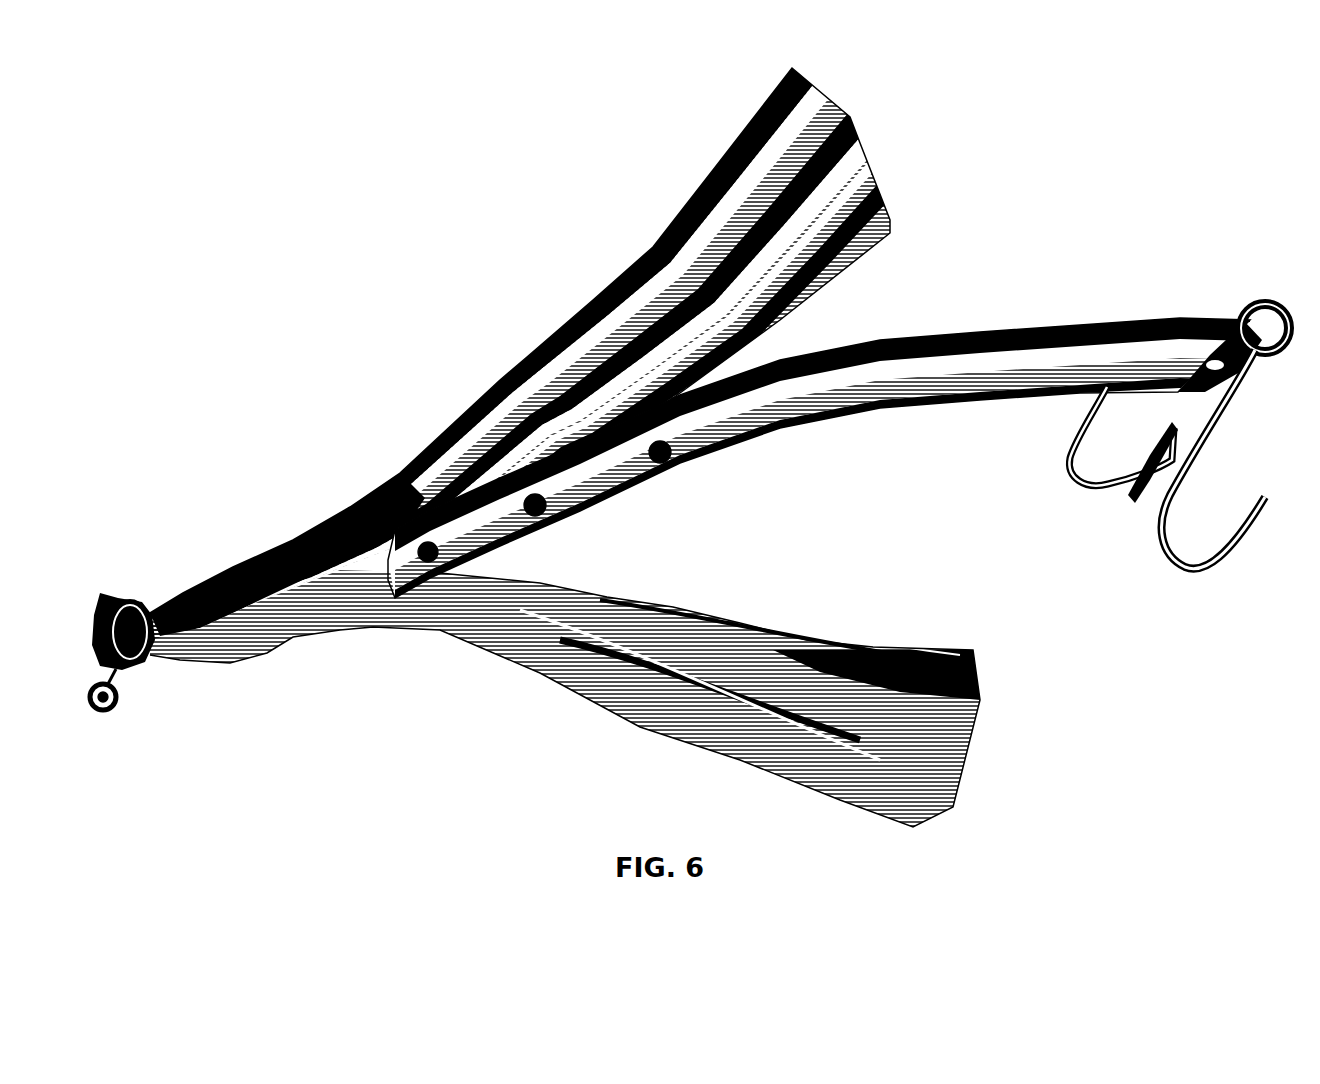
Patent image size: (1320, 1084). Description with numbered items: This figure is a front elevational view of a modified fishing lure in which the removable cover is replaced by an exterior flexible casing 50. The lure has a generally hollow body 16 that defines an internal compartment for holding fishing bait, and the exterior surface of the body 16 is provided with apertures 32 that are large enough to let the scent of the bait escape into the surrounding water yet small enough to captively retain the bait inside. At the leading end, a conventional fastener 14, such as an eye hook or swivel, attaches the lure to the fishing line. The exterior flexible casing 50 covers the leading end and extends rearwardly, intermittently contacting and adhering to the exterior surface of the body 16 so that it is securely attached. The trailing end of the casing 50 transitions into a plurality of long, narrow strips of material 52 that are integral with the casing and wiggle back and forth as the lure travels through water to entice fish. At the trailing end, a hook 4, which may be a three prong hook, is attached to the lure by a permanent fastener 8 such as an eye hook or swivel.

The hook 4 is at (1232, 560).
The permanent fastener 8 is at (1263, 296).
The fastener 14 is at (140, 670).
The body 16 is at (880, 410).
The apertures 32 is at (667, 483).
The exterior flexible casing 50 is at (277, 640).
The long, narrow strips of material 52 is at (575, 305).